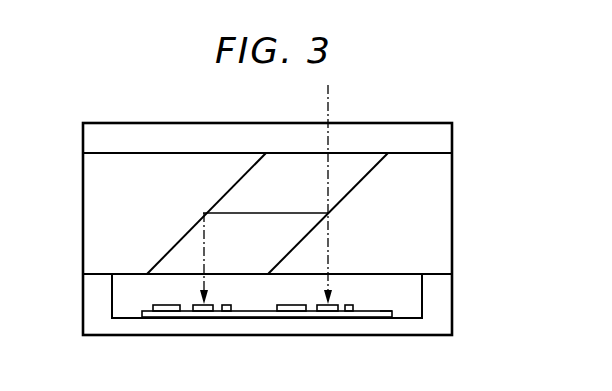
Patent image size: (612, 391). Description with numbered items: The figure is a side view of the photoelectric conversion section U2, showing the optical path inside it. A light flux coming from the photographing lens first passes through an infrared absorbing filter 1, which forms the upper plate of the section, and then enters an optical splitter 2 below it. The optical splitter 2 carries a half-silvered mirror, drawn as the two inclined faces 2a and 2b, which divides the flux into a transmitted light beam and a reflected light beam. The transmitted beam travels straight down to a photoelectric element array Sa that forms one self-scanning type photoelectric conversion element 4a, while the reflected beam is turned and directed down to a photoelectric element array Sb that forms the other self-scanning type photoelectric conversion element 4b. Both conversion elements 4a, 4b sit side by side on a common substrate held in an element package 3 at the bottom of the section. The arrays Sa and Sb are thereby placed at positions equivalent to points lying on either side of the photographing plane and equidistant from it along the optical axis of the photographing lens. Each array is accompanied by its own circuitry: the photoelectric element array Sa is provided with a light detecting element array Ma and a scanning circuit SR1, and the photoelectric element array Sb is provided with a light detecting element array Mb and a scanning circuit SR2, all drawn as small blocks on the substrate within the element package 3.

The photoelectric conversion section U2 is at (452, 118).
The infrared absorbing filter 1 is at (453, 146).
The optical splitter 2 is at (452, 245).
The light guide / reflecting surface 2a is at (369, 173).
The light guide / reflecting surface 2b is at (243, 176).
The element package 3 is at (447, 316).
The self-scanning type photoelectric conversion element 4a is at (402, 320).
The self-scanning type photoelectric conversion element 4b is at (134, 316).
The scanning circuit SR1 is at (290, 312).
The scanning circuit SR2 is at (160, 312).
The photoelectric element array Sa is at (325, 312).
The photoelectric element array Sb is at (203, 312).
The light detecting element array Ma is at (352, 312).
The light detecting element array Mb is at (226, 312).